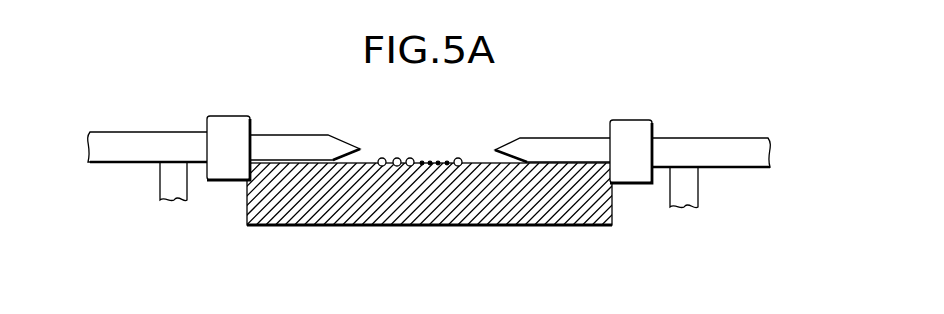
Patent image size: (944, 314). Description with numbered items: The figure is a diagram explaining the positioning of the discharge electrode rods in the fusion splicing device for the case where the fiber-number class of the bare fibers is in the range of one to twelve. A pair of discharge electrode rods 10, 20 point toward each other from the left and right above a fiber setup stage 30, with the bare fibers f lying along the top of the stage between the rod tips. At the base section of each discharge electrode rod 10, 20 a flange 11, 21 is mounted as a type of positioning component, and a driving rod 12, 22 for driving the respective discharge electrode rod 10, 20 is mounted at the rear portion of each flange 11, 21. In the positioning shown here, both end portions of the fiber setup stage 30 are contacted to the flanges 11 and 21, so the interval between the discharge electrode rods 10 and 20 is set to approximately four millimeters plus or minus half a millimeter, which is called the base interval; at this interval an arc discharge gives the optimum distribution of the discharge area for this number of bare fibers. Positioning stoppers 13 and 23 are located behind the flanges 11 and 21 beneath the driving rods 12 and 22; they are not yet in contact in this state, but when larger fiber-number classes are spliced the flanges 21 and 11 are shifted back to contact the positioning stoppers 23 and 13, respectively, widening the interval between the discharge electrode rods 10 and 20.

The discharge electrode rod 10 is at (281, 135).
The flange 11 is at (228, 116).
The driving rod 12 is at (137, 132).
The positioning stopper 13 is at (160, 178).
The discharge electrode rod 20 is at (581, 138).
The flange 21 is at (628, 120).
The driving rod 22 is at (725, 138).
The positioning stopper 23 is at (742, 230).
The fiber setup stage 30 is at (426, 228).
The optical fiber f is at (398, 159).